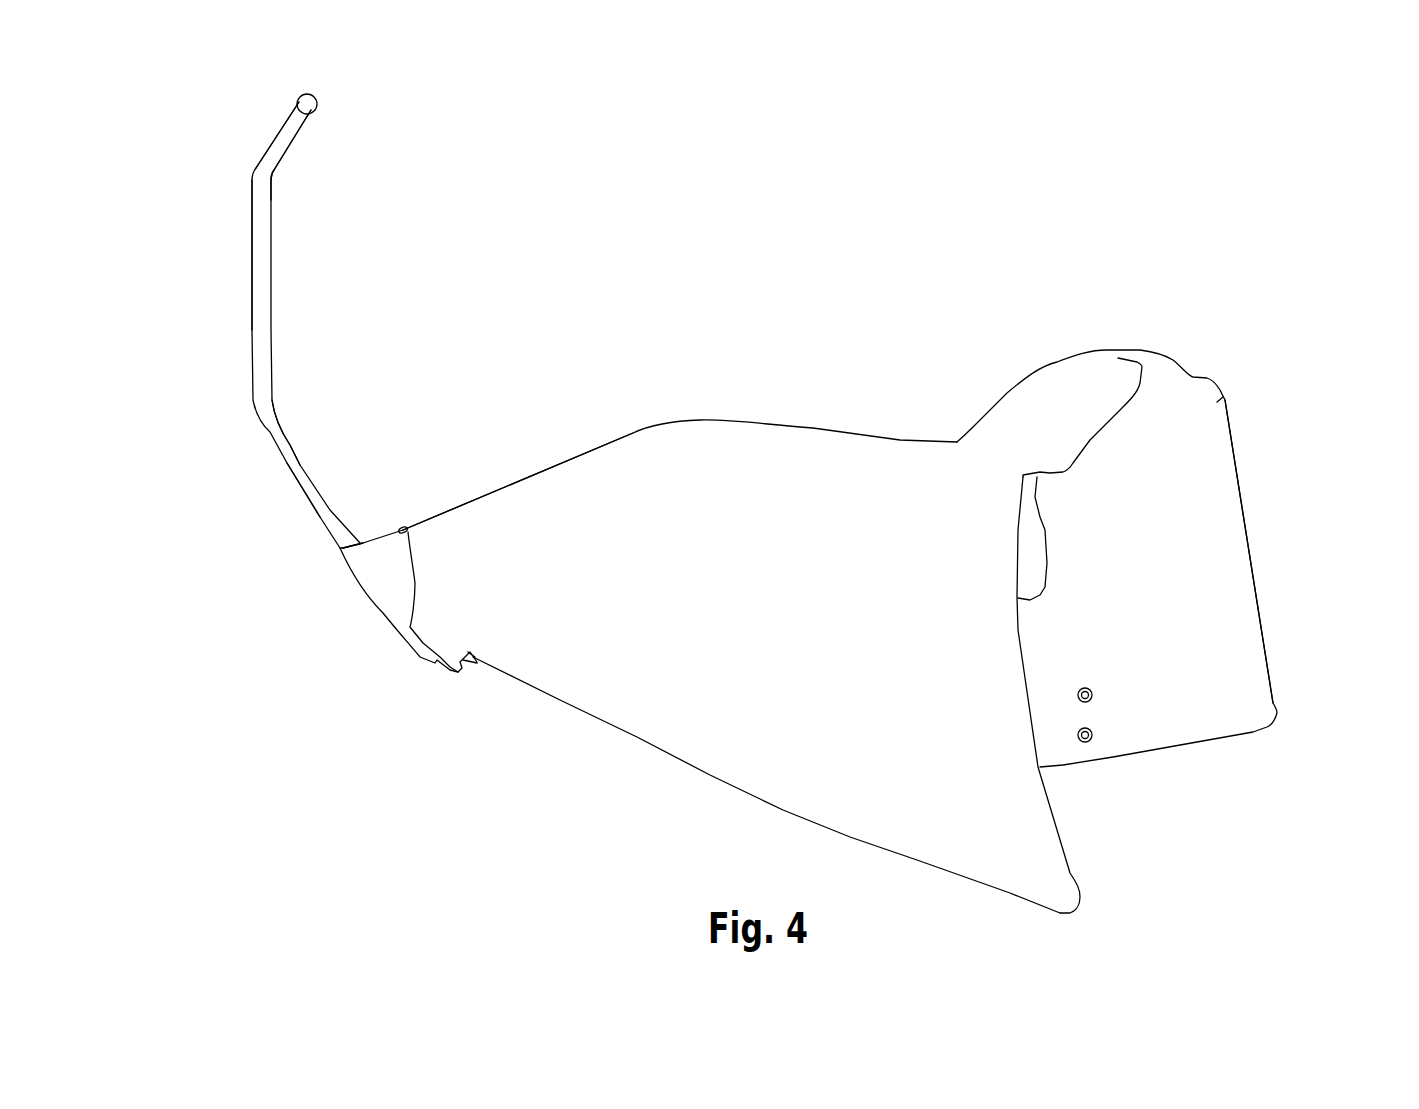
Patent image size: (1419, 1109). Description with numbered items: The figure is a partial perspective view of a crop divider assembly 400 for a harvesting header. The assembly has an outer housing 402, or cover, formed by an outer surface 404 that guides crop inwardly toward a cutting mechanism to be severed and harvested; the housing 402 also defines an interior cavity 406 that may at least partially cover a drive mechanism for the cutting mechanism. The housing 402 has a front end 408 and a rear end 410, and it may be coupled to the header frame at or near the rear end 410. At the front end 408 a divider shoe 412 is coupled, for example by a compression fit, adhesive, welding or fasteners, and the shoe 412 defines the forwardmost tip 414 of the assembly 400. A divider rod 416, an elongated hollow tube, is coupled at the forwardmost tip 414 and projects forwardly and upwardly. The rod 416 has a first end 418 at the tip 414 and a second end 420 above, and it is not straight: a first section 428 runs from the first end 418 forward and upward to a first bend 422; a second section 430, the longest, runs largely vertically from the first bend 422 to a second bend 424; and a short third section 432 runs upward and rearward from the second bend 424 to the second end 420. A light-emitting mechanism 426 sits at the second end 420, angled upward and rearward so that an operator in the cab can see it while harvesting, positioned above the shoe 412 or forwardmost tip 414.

The crop divider assembly 400 is at (897, 203).
The outer housing 402 is at (813, 425).
The outer surface 404 is at (802, 588).
The interior cavity 406 is at (1123, 797).
The front end 408 is at (532, 393).
The rear end 410 is at (1325, 475).
The divider shoe 412 is at (388, 597).
The forwardmost tip 414 is at (337, 552).
The divider rod 416 is at (263, 307).
The first end 418 is at (365, 543).
The second end 420 is at (323, 112).
The first bend 422 is at (297, 462).
The second bend 424 is at (275, 182).
The light-emitting mechanism 426 is at (314, 97).
The first section 428 is at (303, 503).
The second section 430 is at (260, 255).
The third section 432 is at (280, 140).